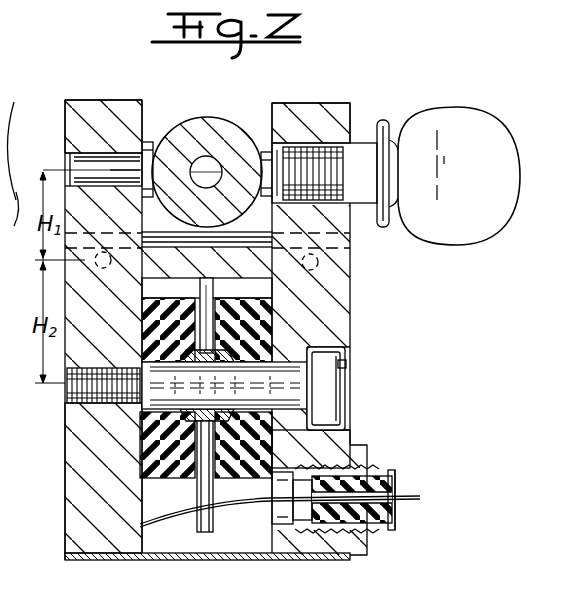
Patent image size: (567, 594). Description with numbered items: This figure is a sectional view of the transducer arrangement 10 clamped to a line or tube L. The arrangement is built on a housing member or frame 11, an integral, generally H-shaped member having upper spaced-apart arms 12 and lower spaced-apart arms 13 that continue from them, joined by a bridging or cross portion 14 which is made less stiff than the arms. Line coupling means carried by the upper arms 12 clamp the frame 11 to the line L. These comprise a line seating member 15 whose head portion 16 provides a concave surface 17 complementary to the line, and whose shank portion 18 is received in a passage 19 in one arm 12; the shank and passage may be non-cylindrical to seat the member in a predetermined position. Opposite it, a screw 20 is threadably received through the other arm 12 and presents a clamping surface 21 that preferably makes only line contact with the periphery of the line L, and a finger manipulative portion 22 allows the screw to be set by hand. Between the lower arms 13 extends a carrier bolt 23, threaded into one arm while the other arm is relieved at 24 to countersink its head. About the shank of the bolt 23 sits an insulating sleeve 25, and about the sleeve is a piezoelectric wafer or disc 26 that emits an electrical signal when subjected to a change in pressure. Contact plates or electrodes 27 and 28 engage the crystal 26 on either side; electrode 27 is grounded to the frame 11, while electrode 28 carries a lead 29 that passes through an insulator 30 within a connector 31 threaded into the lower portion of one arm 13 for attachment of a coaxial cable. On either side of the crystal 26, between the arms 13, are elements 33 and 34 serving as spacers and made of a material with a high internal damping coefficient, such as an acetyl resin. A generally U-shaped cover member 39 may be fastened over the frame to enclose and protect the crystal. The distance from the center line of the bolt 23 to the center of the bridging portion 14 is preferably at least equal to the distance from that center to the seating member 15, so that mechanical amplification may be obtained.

The transducer arrangement 10 is at (366, 91).
The housing member or frame 11 is at (352, 270).
The upper spaced-apart arms 12 is at (88, 119).
The lower spaced-apart arms 13 is at (77, 515).
The bridging or cross portion 14 is at (262, 287).
The line seating member 15 is at (125, 150).
The head portion 16 is at (151, 150).
The surface 17 is at (157, 152).
The shank portion 18 is at (93, 160).
The passage 19 is at (70, 163).
The screw 20 is at (350, 162).
The clamping surface 21 is at (258, 136).
The finger manipulative portion 22 is at (465, 127).
The carrier bolt 23 is at (292, 383).
The relief 24 is at (344, 351).
The insulating sleeve 25 is at (228, 357).
The piezoelectric wafer or disc 26 is at (145, 440).
The contact plate or electrode 27 is at (196, 497).
The contact plate or electrode 28 is at (214, 497).
The lead 29 is at (422, 483).
The insulator 30 is at (397, 502).
The connector 31 is at (378, 472).
The damping element 33 is at (140, 428).
The damping element 34 is at (268, 437).
The U-shaped cover member 39 is at (237, 557).
The line or tube L is at (217, 127).